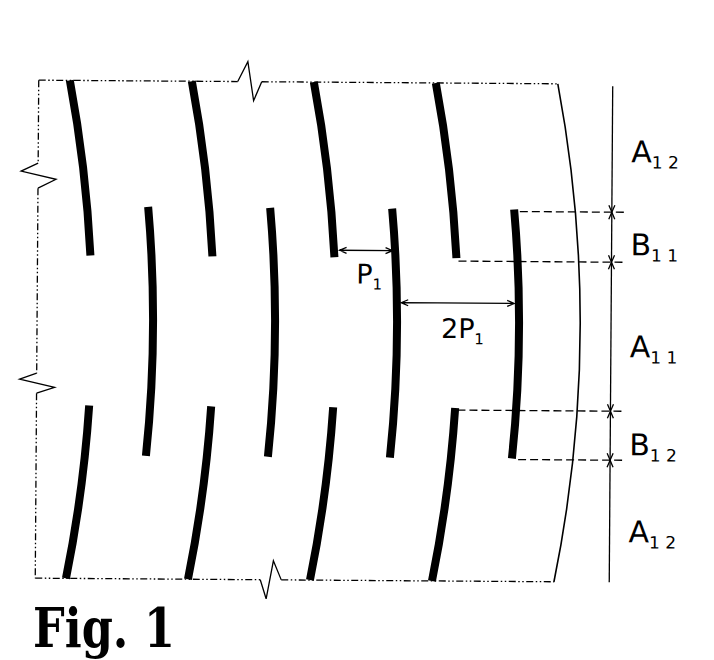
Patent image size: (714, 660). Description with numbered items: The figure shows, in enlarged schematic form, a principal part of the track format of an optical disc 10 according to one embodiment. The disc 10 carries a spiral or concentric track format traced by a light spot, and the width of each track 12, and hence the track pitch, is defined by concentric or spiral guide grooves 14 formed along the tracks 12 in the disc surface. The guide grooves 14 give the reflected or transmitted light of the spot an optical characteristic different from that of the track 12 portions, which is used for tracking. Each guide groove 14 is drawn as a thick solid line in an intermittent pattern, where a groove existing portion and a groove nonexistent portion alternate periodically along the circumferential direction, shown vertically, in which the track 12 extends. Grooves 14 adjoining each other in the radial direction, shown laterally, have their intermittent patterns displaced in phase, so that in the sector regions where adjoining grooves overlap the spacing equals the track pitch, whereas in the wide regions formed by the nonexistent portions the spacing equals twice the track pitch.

The disc 10 is at (566, 125).
The track 12 is at (233, 213).
The guide grooves 14 is at (400, 230).